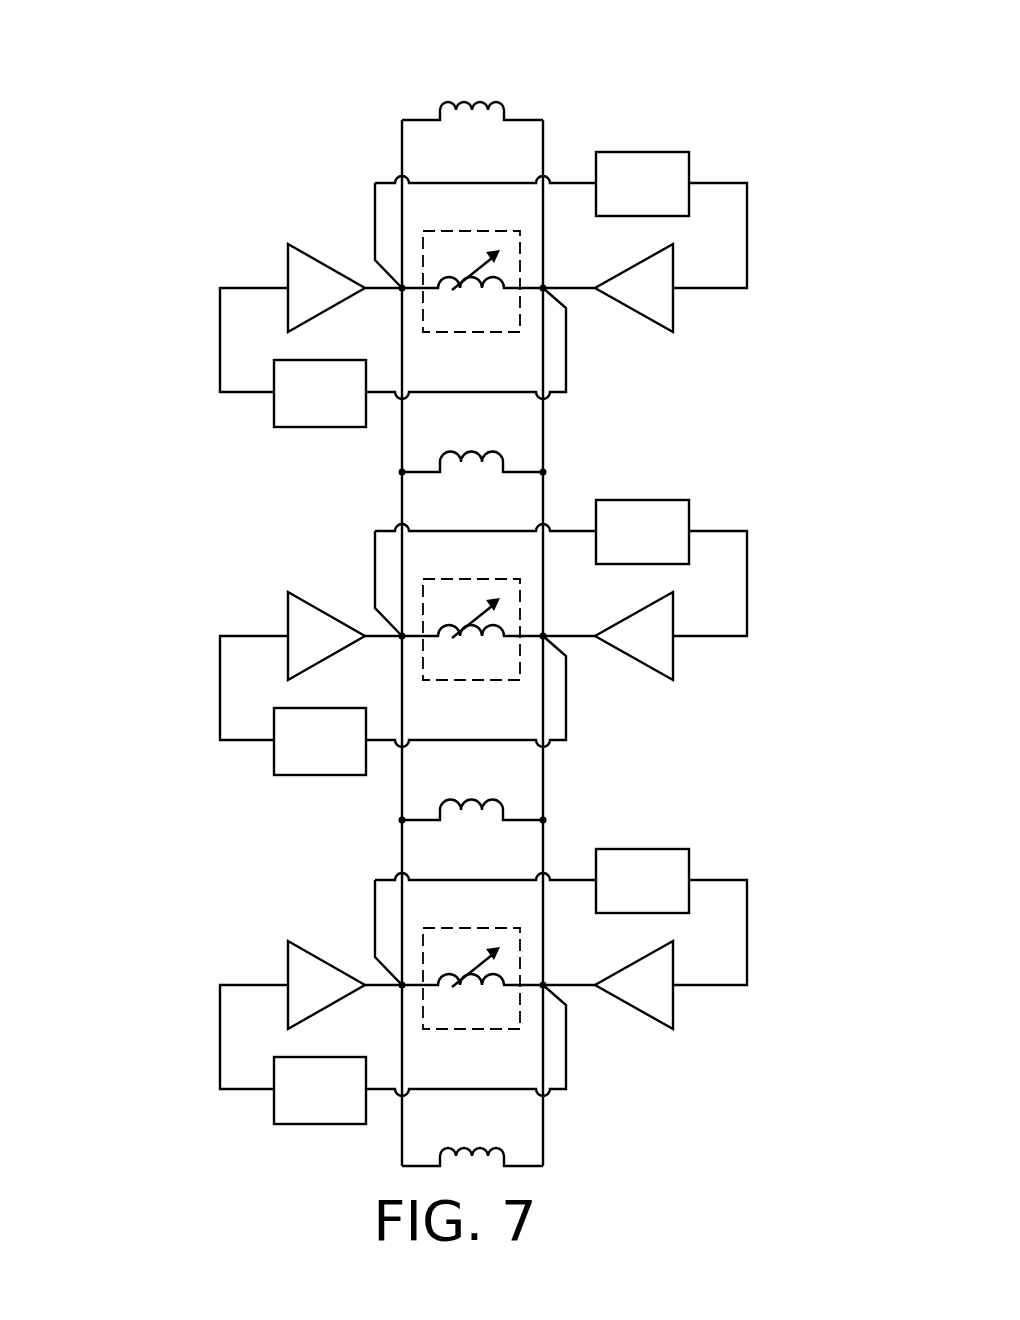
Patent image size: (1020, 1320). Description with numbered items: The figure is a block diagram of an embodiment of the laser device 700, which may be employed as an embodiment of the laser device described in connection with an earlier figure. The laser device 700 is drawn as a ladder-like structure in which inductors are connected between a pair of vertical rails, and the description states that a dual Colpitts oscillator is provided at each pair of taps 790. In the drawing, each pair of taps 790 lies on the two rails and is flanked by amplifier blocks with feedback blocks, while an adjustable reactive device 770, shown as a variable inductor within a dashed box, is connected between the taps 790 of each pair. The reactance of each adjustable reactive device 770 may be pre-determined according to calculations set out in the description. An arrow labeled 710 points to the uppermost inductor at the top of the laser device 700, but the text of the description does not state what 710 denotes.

The laser device 700 is at (92, 600).
The input node / inductor L1 section 710 is at (477, 86).
The adjustable reactive device 770 is at (467, 334).
The taps 790 is at (395, 294).